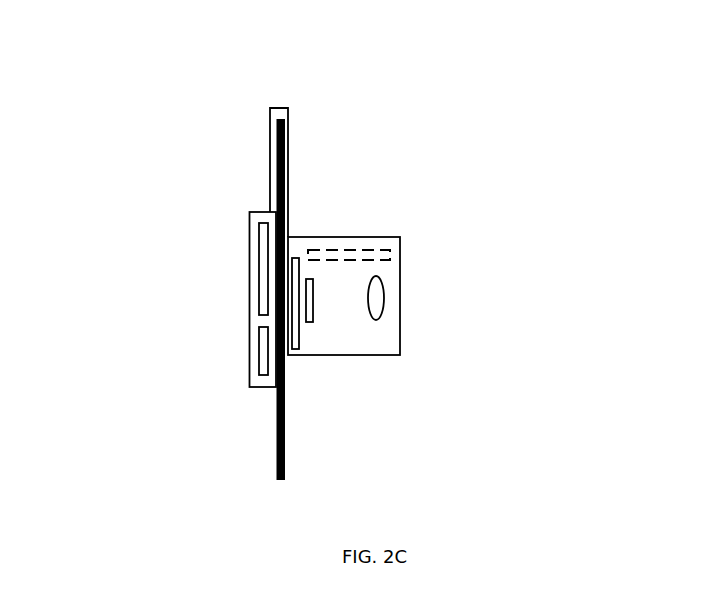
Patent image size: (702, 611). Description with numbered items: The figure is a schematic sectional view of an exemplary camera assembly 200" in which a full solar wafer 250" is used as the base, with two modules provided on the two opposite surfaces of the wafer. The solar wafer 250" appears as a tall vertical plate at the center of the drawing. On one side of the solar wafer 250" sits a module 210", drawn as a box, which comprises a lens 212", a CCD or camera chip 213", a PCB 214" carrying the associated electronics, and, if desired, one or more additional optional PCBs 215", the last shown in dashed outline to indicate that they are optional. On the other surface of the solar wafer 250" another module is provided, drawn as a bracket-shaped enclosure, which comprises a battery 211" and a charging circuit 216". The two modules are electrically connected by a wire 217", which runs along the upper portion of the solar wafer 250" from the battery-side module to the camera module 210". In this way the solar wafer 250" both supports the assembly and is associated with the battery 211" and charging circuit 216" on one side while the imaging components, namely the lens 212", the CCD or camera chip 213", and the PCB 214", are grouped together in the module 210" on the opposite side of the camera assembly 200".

The camera assembly 200 is at (196, 116).
The module 210 is at (392, 348).
The battery 211 is at (260, 265).
The lens 212 is at (384, 288).
The CCD or camera chip 213 is at (313, 313).
The PCB 214 is at (295, 258).
The additional optional PCB 215 is at (358, 250).
The charging circuit 216 is at (258, 358).
The wire 217 is at (290, 160).
The solar wafer 250 is at (277, 438).